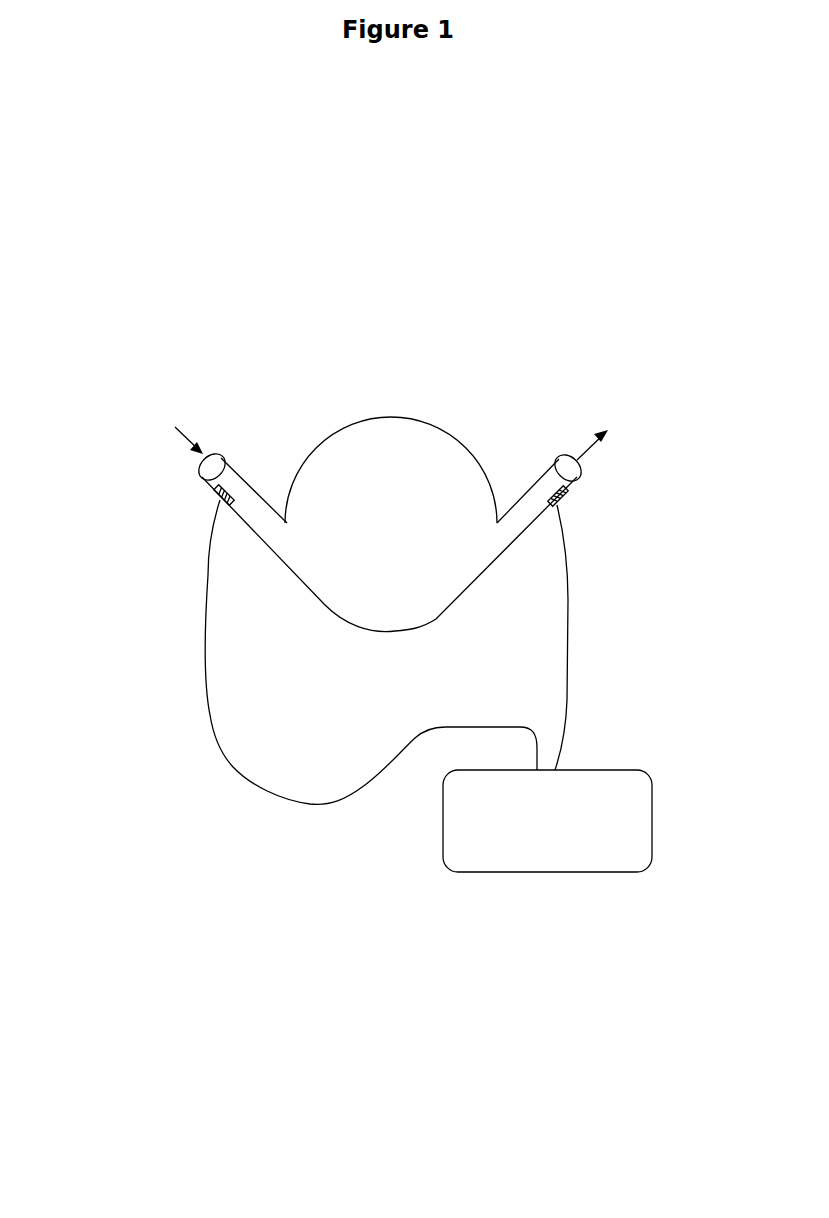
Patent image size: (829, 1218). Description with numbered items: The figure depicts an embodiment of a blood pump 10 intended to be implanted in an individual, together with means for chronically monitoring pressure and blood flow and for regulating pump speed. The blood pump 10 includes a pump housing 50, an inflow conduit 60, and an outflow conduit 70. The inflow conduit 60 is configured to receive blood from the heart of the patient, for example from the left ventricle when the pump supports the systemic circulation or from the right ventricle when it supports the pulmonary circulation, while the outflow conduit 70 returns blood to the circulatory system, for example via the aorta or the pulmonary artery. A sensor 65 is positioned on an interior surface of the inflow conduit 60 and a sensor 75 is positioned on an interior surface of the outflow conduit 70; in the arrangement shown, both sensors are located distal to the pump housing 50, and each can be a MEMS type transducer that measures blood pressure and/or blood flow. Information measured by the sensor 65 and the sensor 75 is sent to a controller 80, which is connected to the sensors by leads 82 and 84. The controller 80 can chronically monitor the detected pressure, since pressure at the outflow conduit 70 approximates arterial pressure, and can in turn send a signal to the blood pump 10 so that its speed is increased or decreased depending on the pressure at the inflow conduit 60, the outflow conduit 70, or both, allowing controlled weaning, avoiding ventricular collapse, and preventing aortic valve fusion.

The blood pump 10 is at (396, 306).
The pump housing 50 is at (375, 590).
The inflow conduit 60 is at (226, 460).
The sensor 65 is at (217, 500).
The outflow conduit 70 is at (550, 475).
The sensor 75 is at (567, 498).
The controller 80 is at (542, 847).
The lead 82 is at (218, 732).
The lead 84 is at (568, 622).